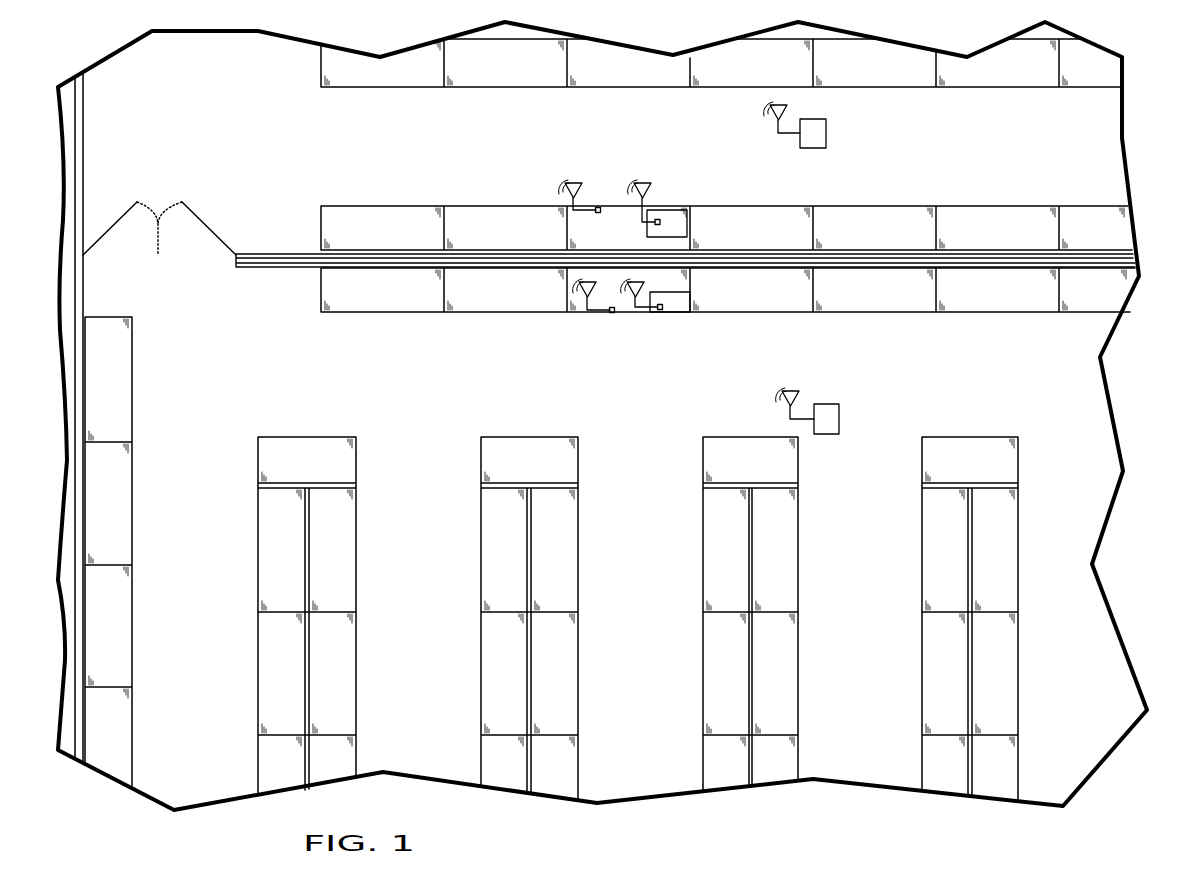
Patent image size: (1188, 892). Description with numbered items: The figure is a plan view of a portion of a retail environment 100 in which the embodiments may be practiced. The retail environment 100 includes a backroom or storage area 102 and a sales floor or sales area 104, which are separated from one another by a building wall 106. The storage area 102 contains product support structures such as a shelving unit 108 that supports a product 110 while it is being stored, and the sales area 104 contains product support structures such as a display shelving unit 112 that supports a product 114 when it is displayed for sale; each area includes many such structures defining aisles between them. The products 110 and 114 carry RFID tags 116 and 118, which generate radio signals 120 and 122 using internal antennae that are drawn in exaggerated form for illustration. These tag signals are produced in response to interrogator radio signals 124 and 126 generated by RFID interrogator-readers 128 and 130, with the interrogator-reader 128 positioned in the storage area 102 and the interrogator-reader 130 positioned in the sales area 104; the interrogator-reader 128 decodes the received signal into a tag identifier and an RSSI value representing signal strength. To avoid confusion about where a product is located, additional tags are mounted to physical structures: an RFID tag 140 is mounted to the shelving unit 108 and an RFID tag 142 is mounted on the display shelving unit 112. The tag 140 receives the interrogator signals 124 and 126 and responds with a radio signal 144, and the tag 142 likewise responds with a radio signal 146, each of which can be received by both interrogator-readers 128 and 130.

The retail environment 100 is at (1098, 777).
The storage area 102 is at (942, 176).
The sales area 104 is at (873, 378).
The building wall 106 is at (267, 255).
The shelving unit 108 is at (571, 232).
The product 110 is at (672, 209).
The shelving unit 112 is at (691, 290).
The product 114 is at (692, 312).
The RFID tag 116 is at (660, 219).
The RFID tag 118 is at (661, 310).
The radio signal 120 is at (634, 180).
The radio signal 122 is at (621, 286).
The radio signal 124 is at (763, 104).
The radio signal 126 is at (774, 392).
The RFID interrogator-reader 128 is at (826, 143).
The RFID interrogator-reader 130 is at (840, 426).
The RFID tag 140 is at (599, 207).
The RFID tag 142 is at (612, 313).
The radio signal 144 is at (561, 181).
The radio signal 146 is at (573, 284).